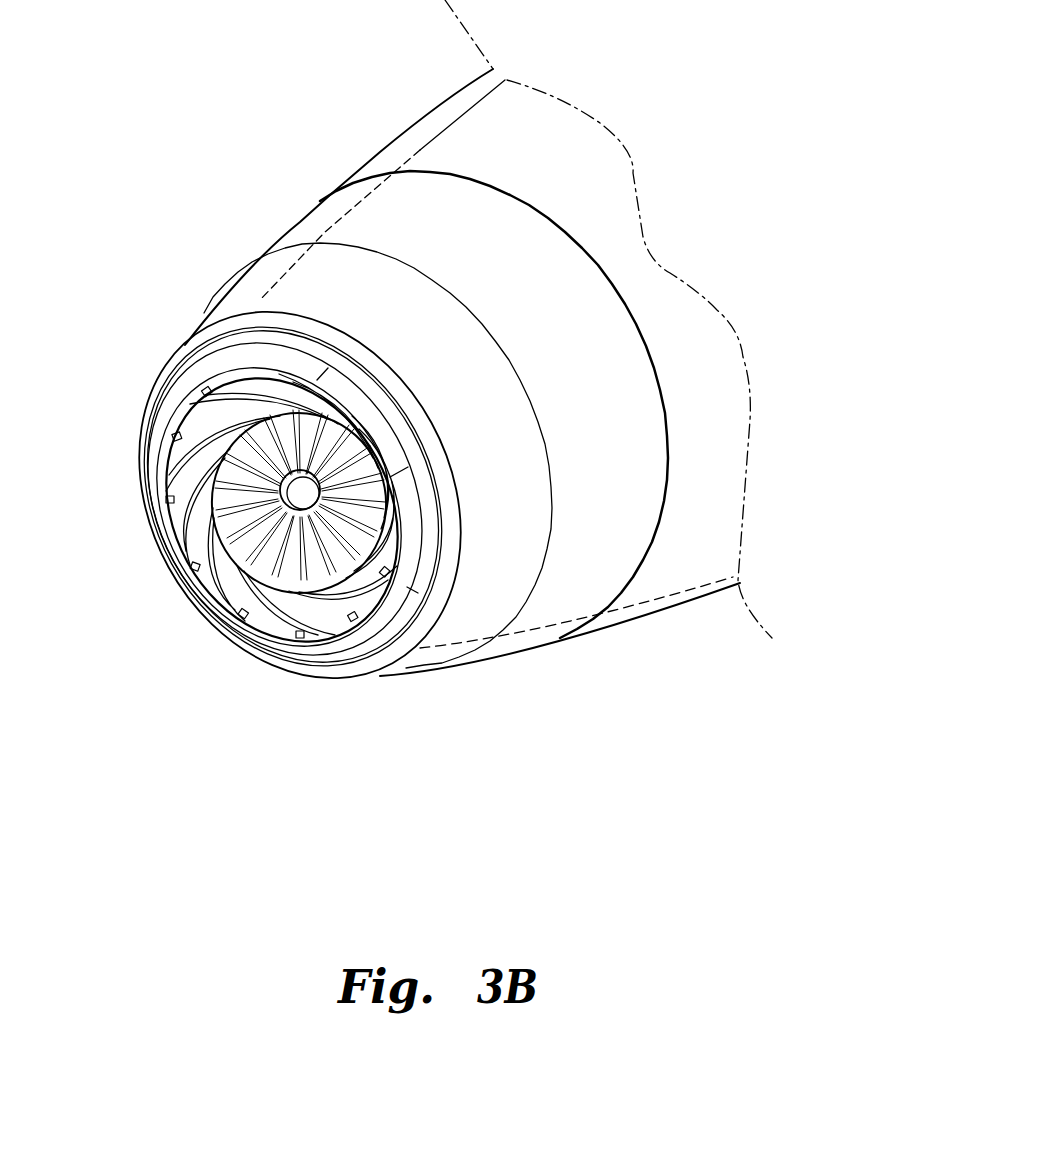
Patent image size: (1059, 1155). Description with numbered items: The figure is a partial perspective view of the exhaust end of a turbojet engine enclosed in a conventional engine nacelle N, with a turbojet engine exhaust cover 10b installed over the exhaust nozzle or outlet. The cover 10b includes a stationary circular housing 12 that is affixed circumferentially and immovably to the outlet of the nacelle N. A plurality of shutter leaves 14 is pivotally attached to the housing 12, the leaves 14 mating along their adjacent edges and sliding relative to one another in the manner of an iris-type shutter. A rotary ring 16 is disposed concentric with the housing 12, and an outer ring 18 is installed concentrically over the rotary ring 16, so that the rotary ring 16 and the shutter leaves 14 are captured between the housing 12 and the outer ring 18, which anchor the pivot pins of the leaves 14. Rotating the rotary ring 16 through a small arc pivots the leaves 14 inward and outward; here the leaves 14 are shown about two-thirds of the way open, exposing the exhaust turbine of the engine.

The engine nacelle N is at (420, 115).
The turbojet engine exhaust cover 10b is at (185, 673).
The stationary circular housing 12 is at (377, 368).
The shutter leaves 14 is at (183, 490).
The rotary ring 16 is at (377, 657).
The outer ring 18 is at (390, 447).